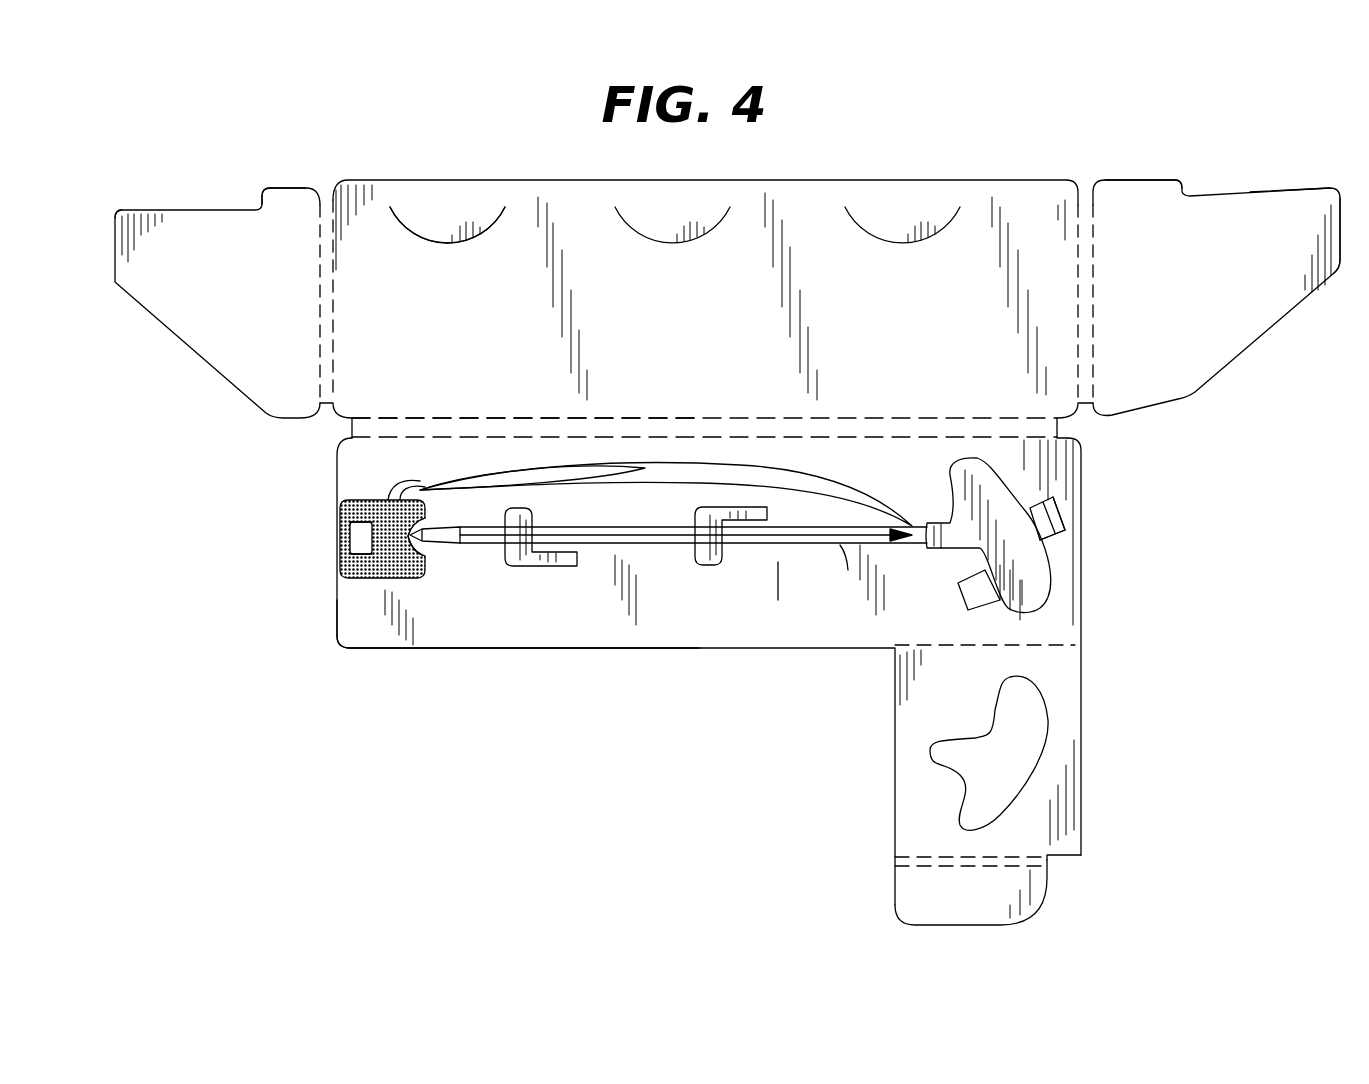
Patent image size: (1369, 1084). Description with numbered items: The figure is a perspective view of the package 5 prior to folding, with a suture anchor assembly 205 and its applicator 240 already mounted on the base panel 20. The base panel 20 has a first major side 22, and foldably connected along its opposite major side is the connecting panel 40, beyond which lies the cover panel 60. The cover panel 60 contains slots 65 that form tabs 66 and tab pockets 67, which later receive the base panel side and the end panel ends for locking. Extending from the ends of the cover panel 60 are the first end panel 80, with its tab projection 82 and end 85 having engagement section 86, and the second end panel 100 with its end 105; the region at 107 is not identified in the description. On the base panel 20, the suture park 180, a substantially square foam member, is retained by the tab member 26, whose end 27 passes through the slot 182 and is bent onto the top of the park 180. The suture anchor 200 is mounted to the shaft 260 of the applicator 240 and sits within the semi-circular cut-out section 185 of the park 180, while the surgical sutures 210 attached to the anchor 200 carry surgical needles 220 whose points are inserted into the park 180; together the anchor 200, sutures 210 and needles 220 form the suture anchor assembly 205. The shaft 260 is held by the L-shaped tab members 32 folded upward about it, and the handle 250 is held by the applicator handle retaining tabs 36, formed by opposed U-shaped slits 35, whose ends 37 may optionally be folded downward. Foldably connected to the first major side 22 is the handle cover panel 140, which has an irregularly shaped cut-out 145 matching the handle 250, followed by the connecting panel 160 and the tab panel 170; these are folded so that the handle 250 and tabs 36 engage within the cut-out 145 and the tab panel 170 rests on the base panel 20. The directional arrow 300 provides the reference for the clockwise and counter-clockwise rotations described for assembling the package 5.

The package 5 is at (984, 157).
The base panel 20 is at (670, 606).
The first major side 22 is at (620, 648).
The tab member 26 is at (352, 548).
The end of tab 27 is at (356, 523).
The L-shaped tab members 32 is at (565, 566).
The U-shaped slits 35 is at (1066, 508).
The applicator handle retaining tabs 36 is at (1074, 523).
The ends of tab members 37 is at (1062, 541).
The connecting panel 40 is at (352, 428).
The cover panel 60 is at (802, 258).
The slots 65 is at (435, 243).
The tabs 66 is at (420, 223).
The tab pockets 67 is at (477, 194).
The first end panel 80 is at (1205, 262).
The tab projection 82 is at (1124, 186).
The end 85 is at (1335, 266).
The engagement section 86 is at (1290, 188).
The second end panel 100 is at (236, 298).
The end 105 is at (125, 248).
The flap tab 107 is at (287, 186).
The handle cover panel 140 is at (1062, 673).
The irregularly shaped cut-out 145 is at (1030, 753).
The connecting panel 160 is at (897, 861).
The tab panel 170 is at (958, 916).
The suture park 180 is at (380, 580).
The slot 182 is at (352, 537).
The semi-circular cut-out section 185 is at (430, 562).
The suture anchor 200 is at (424, 531).
The suture anchor assembly 205 is at (410, 661).
The surgical sutures 210 is at (558, 484).
The surgical needles 220 is at (400, 493).
The suture anchor applicator 240 is at (778, 562).
The handle 250 is at (997, 493).
The shaft 260 is at (848, 570).
The directional arrow 300 is at (313, 690).